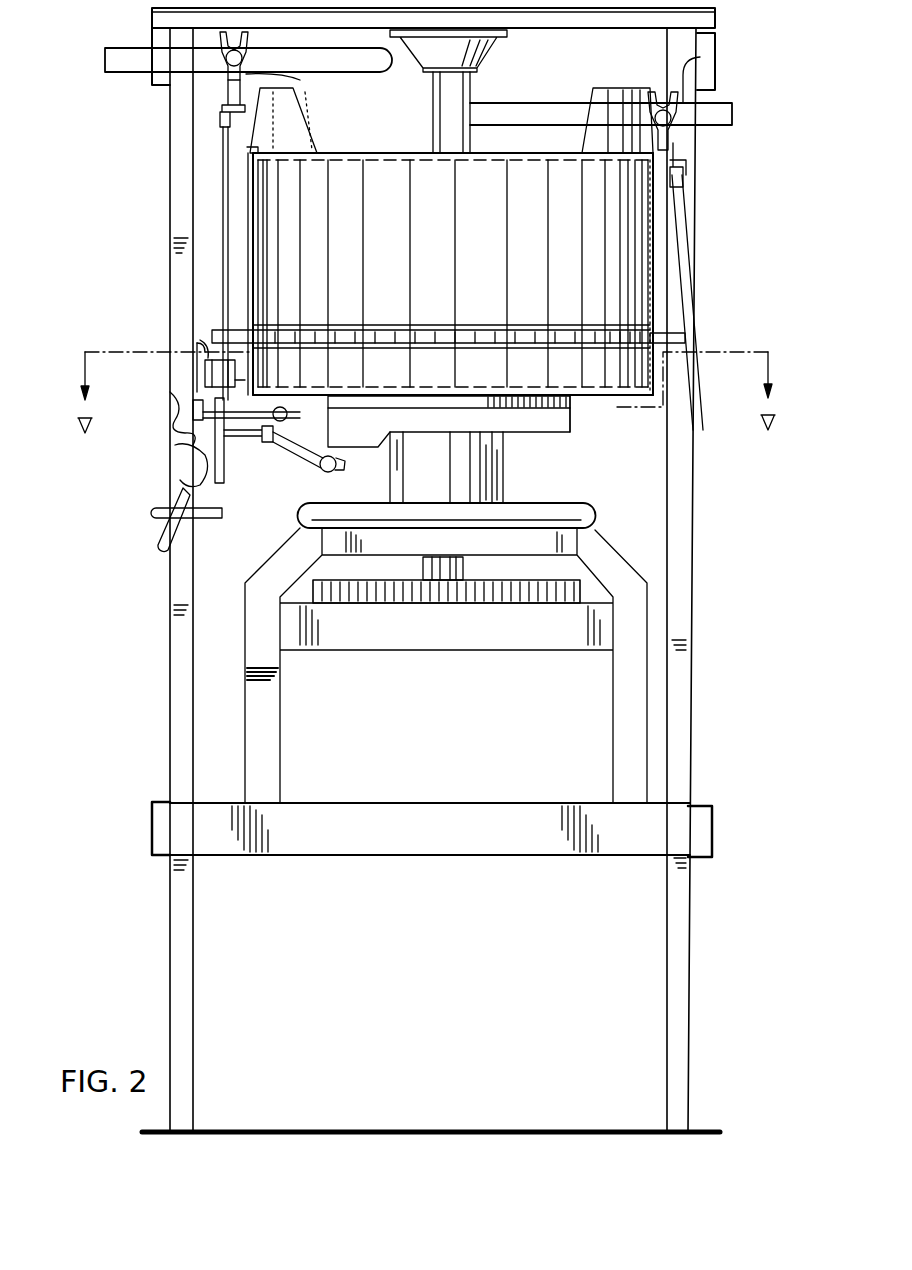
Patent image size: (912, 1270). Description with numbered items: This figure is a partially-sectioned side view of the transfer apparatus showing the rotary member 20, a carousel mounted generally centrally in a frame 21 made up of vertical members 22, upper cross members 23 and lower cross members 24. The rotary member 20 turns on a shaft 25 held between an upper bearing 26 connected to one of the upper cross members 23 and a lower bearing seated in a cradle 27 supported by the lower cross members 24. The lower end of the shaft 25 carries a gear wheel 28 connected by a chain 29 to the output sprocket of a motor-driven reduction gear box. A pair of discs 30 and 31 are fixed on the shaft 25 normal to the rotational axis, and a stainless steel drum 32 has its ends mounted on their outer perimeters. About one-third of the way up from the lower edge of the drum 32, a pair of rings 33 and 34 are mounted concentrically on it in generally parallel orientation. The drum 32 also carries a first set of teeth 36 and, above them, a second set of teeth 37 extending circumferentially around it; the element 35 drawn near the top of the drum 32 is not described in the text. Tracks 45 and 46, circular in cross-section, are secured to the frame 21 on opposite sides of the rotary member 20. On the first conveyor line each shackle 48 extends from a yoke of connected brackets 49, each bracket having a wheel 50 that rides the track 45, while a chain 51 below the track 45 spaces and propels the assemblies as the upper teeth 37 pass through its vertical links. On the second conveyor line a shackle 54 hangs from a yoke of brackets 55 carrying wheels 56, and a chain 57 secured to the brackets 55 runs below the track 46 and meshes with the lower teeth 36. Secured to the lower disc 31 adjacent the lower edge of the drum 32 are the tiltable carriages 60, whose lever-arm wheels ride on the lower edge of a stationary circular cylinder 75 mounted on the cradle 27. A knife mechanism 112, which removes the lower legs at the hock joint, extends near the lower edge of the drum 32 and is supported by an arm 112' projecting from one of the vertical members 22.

The rotary member 20 is at (624, 432).
The frame 21 is at (700, 540).
The vertical members 22 is at (170, 663).
The upper cross members 23 is at (706, 20).
The lower cross members 24 is at (712, 830).
The shaft 25 is at (455, 85).
The upper bearing 26 is at (498, 50).
The cradle 27 is at (630, 592).
The gear wheel 28 is at (562, 572).
The chain 29 is at (580, 597).
The disc 30 is at (388, 152).
The disc 31 is at (588, 398).
The drum 32 is at (648, 240).
The ring 33 is at (598, 330).
The ring 34 is at (598, 350).
The flap 35 is at (250, 162).
The first set of teeth 36 is at (240, 160).
The second set of teeth 37 is at (250, 147).
The track 45 is at (130, 52).
The track 46 is at (715, 105).
The shackle 48 is at (222, 213).
The brackets 49 is at (250, 78).
The wheel 50 is at (258, 34).
The chain 51 is at (232, 97).
The shackle 54 is at (686, 215).
The brackets 55 is at (648, 140).
The wheel 56 is at (700, 57).
The chain 57 is at (660, 148).
The tiltable carriage 60 is at (247, 458).
The stationary circular cylinder 75 is at (556, 432).
The knife mechanism 112 is at (178, 367).
The arm 112' is at (160, 332).